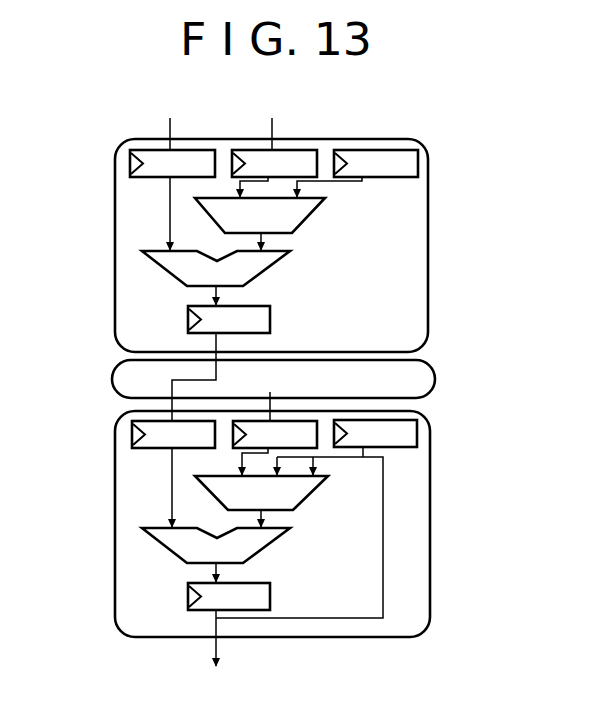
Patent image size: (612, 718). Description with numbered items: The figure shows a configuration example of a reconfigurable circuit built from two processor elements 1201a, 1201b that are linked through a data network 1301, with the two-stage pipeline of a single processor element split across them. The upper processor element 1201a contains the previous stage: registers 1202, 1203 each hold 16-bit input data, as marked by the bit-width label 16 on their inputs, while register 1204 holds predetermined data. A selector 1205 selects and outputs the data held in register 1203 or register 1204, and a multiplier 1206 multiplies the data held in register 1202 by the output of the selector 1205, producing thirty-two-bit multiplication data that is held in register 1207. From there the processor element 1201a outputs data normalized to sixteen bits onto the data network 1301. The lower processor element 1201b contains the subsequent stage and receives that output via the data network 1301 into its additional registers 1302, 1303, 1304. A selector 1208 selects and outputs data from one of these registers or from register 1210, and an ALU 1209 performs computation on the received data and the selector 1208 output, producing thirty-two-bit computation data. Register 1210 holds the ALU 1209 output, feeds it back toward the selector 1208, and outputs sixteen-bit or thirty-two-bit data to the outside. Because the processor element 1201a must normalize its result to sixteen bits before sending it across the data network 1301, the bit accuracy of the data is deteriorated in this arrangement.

The 16-bit data width 16 is at (210, 131).
The processor element 1201a is at (428, 260).
The processor element 1201b is at (430, 545).
The register 1202 is at (130, 160).
The register 1203 is at (296, 151).
The register 1204 is at (418, 158).
The selector 1205 is at (308, 220).
The multiplier 1206 is at (160, 272).
The register 1207 is at (270, 317).
The selector 1208 is at (313, 497).
The ALU 1209 is at (163, 547).
The register 1210 is at (270, 594).
The data network 1301 is at (435, 375).
The register 1302 is at (132, 430).
The register 1303 is at (238, 433).
The register 1304 is at (418, 432).